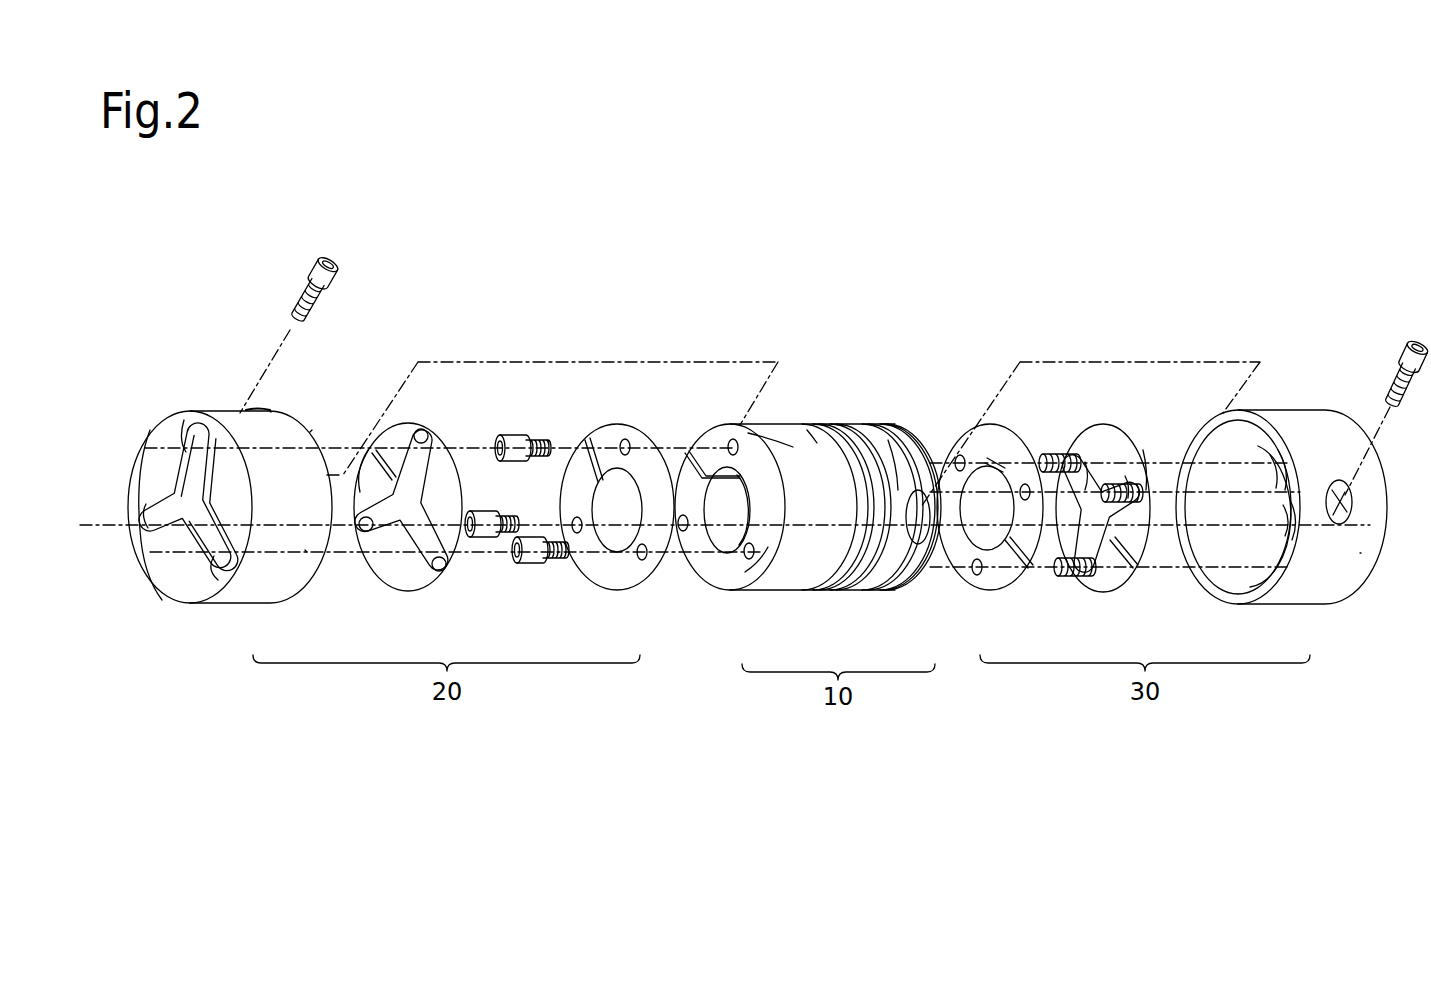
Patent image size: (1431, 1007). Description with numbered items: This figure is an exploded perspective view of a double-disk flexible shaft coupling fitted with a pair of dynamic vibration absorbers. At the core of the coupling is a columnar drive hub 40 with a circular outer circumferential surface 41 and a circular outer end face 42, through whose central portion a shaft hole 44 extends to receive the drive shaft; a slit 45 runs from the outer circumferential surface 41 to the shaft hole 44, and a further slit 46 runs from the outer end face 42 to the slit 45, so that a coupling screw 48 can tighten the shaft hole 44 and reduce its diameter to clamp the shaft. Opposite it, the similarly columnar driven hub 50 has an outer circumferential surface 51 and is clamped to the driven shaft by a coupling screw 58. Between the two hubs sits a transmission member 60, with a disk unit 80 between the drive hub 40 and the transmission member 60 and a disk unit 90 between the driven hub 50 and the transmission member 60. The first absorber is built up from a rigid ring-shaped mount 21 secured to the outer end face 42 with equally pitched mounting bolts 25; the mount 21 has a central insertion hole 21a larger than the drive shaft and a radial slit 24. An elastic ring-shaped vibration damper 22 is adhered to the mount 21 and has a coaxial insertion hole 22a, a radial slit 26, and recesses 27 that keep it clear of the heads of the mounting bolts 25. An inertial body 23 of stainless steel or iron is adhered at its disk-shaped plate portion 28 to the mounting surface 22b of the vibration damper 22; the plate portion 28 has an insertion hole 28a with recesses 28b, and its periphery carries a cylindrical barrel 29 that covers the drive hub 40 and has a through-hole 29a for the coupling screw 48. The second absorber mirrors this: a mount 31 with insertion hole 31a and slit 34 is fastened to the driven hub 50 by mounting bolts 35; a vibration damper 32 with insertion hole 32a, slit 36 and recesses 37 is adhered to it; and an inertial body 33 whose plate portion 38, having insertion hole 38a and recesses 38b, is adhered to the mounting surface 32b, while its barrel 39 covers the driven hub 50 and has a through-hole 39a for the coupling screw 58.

The mount 21 is at (605, 582).
The insertion hole 21a is at (592, 503).
The vibration damper 22 is at (423, 582).
The insertion hole 22a is at (437, 468).
The mounting surface 22b is at (391, 582).
The inertial body 23 is at (262, 597).
The slit 24 is at (596, 445).
The mounting bolts 25 is at (536, 435).
The slit 26 is at (401, 500).
The recesses 27 is at (422, 426).
The plate portion 28 is at (163, 584).
The insertion hole 28a is at (229, 498).
The recesses 28b is at (196, 413).
The barrel 29 is at (309, 426).
The through-hole 29a is at (264, 410).
The mount 31 is at (995, 580).
The insertion hole 31a is at (1000, 463).
The vibration damper 32 is at (1098, 582).
The insertion hole 32a is at (1100, 457).
The mounting surface 32b is at (1147, 470).
The inertial body 33 is at (1280, 597).
The slit 34 is at (987, 508).
The mounting bolts 35 is at (1057, 453).
The slit 36 is at (1128, 570).
The recesses 37 is at (1085, 462).
The plate portion 38 is at (1255, 542).
The insertion hole 38a is at (1292, 514).
The recesses 38b is at (1286, 452).
The barrel 39 is at (1360, 553).
The through-hole 39a is at (1334, 480).
The drive hub 40 is at (765, 583).
The outer circumferential surface 41 is at (802, 438).
The outer end face 42 is at (714, 582).
The shaft hole 44 is at (703, 560).
The slit 45 is at (745, 506).
The slit 46 is at (716, 446).
The coupling screw 48 is at (319, 266).
The driven hub 50 is at (909, 575).
The outer circumferential surface 51 is at (912, 438).
The coupling screw 58 is at (1412, 350).
The transmission member 60 is at (844, 573).
The disk unit 80 is at (823, 553).
The disk unit 90 is at (872, 560).